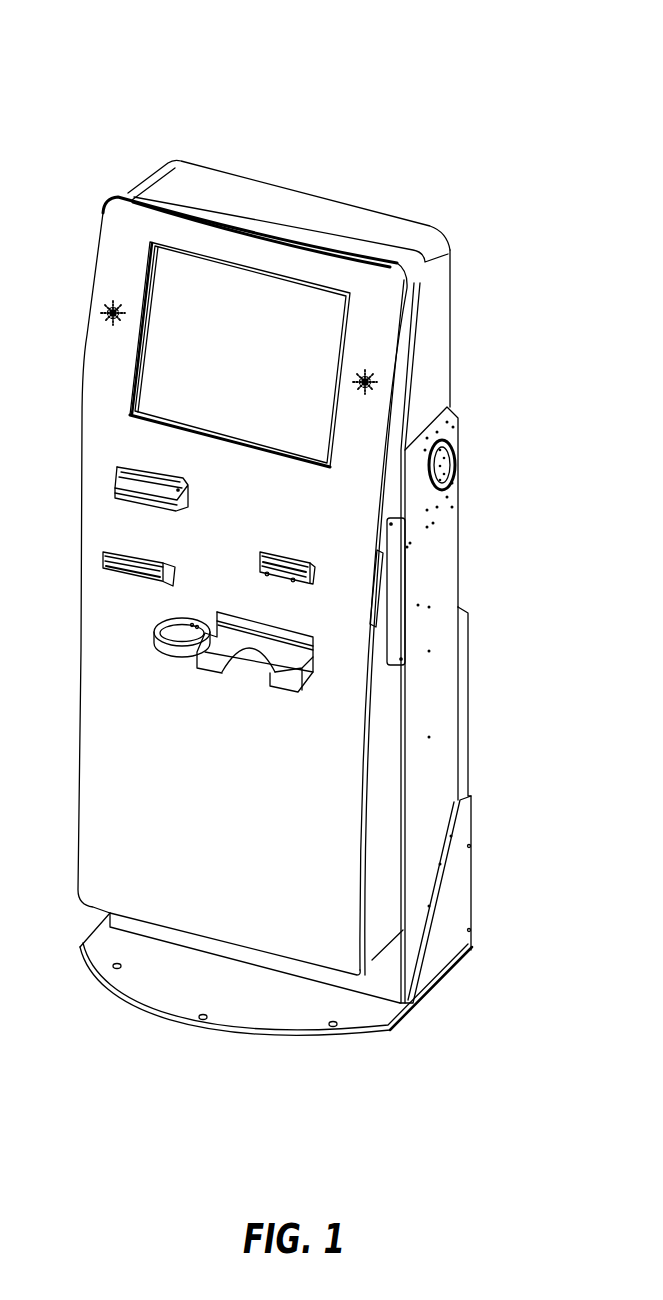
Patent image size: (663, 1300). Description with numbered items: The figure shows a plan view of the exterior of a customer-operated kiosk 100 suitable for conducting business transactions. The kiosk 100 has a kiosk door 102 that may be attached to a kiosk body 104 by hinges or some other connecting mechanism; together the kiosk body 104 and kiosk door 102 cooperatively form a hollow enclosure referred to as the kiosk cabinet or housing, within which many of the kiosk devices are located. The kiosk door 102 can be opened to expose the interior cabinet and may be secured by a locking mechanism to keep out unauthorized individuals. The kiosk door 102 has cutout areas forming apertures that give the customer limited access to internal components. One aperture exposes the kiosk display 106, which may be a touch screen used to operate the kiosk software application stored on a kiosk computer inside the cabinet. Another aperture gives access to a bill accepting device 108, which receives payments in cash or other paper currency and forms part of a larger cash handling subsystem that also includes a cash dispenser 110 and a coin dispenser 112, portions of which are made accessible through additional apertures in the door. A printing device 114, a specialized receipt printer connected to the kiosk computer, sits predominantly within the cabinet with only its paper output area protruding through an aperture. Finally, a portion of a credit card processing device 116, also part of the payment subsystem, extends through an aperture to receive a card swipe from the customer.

The kiosk 100 is at (300, 523).
The kiosk door 102 is at (378, 834).
The kiosk body 104 is at (455, 580).
The kiosk display 106 is at (133, 278).
The bill accepting device 108 is at (260, 550).
The cash dispenser 110 is at (258, 624).
The coin dispenser 112 is at (173, 658).
The printing device 114 is at (163, 565).
The credit card processing device 116 is at (110, 482).